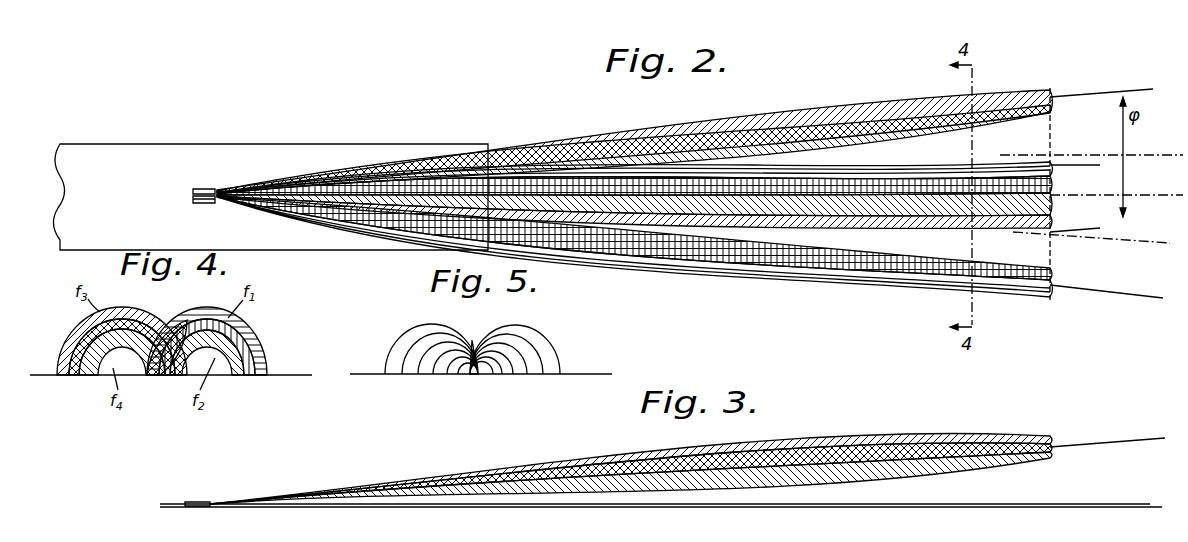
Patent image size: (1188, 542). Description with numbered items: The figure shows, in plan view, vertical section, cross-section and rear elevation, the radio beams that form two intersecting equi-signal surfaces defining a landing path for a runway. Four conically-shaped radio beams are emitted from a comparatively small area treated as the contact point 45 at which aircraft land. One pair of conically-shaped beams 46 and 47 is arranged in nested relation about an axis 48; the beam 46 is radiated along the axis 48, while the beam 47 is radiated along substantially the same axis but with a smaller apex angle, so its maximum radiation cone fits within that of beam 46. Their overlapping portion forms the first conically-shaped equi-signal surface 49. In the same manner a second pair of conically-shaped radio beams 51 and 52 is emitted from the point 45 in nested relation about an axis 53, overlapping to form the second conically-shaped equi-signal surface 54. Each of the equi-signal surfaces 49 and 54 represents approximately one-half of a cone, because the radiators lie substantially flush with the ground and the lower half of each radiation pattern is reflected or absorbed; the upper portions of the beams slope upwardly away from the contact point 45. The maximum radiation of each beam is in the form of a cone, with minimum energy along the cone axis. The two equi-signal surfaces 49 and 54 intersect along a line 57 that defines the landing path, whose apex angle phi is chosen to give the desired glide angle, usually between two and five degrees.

In FIG. 2, the contact point 45 is at (218, 191).
In FIG. 3, the contact point 45 is at (210, 500).
In FIG. 2, the conically-shaped radio beam 46 is at (1046, 89).
In FIG. 4, the conically-shaped radio beam 46 is at (258, 346).
In FIG. 3, the conically-shaped radio beam 46 is at (1045, 435).
In FIG. 2, the conically-shaped radio beam 47 is at (1052, 108).
In FIG. 4, the conically-shaped radio beam 47 is at (234, 373).
In FIG. 3, the conically-shaped radio beam 47 is at (1050, 457).
In FIG. 2, the axis 48 is at (1146, 152).
In FIG. 2, the first conically-shaped equi-signal surface 49 is at (1090, 95).
In FIG. 4, the first conically-shaped equi-signal surface 49 is at (252, 330).
In FIG. 5, the first conically-shaped equi-signal surface 49 is at (407, 336).
In FIG. 3, the first conically-shaped equi-signal surface 49 is at (1110, 444).
In FIG. 2, the conically-shaped radio beam 51 is at (1052, 166).
In FIG. 4, the conically-shaped radio beam 51 is at (70, 343).
In FIG. 2, the conically-shaped radio beam 52 is at (1055, 184).
In FIG. 4, the conically-shaped radio beam 52 is at (105, 370).
In FIG. 2, the axis 53 is at (1138, 240).
In FIG. 2, the second conically-shaped equi-signal surface 54 is at (1112, 172).
In FIG. 4, the second conically-shaped equi-signal surface 54 is at (131, 312).
In FIG. 5, the second conically-shaped equi-signal surface 54 is at (552, 358).
In FIG. 2, the landing path 57 is at (1166, 197).
In FIG. 4, the landing path 57 is at (162, 374).
In FIG. 5, the landing path 57 is at (480, 350).